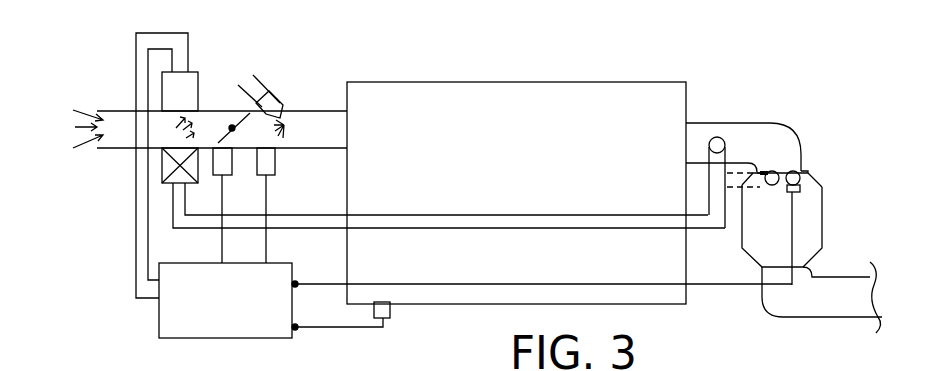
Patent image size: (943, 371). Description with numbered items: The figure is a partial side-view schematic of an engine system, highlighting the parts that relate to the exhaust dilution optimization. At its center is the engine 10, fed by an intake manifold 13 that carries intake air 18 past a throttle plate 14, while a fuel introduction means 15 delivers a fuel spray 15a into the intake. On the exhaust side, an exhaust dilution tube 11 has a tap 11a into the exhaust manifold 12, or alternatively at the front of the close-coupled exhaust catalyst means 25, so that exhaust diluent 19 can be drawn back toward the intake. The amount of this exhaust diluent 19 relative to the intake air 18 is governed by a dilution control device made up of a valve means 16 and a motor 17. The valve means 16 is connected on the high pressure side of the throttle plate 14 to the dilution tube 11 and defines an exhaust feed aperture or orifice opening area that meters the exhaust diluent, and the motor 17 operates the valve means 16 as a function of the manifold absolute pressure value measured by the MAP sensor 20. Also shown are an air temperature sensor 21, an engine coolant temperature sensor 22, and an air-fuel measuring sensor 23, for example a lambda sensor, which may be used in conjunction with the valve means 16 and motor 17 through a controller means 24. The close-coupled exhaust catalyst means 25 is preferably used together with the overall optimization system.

The engine 10 is at (631, 119).
The exhaust dilution tube 11 is at (712, 229).
The tap 11a is at (768, 171).
The exhaust manifold 12 is at (802, 144).
The intake manifold 13 is at (112, 110).
The throttle plate 14 is at (232, 126).
The fuel introduction means 15 is at (283, 93).
The fuel spray 15a is at (308, 132).
The valve means 16 is at (167, 169).
The motor 17 is at (191, 83).
The intake air 18 is at (72, 129).
The exhaust diluent 19 is at (171, 131).
The MAP sensor 20 is at (275, 163).
The air temperature sensor 21 is at (224, 166).
The engine coolant temperature sensor 22 is at (391, 309).
The air-fuel measuring sensor 23 is at (807, 173).
The controller means 24 is at (231, 312).
The close-coupled exhaust catalyst means 25 is at (822, 212).